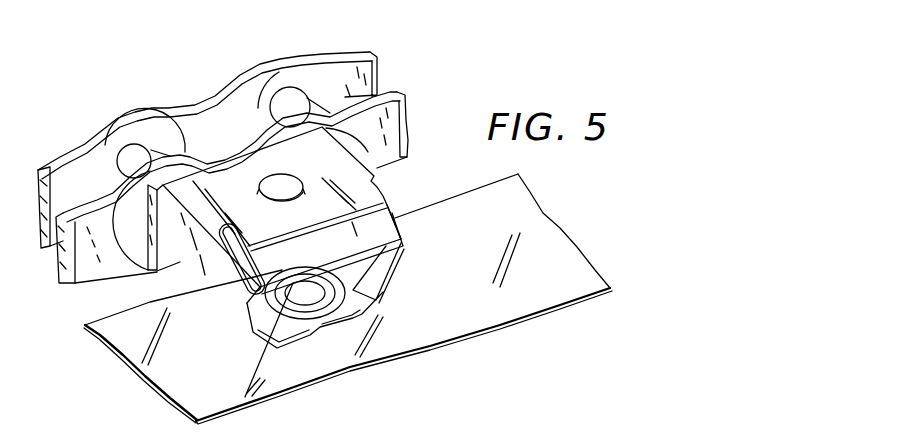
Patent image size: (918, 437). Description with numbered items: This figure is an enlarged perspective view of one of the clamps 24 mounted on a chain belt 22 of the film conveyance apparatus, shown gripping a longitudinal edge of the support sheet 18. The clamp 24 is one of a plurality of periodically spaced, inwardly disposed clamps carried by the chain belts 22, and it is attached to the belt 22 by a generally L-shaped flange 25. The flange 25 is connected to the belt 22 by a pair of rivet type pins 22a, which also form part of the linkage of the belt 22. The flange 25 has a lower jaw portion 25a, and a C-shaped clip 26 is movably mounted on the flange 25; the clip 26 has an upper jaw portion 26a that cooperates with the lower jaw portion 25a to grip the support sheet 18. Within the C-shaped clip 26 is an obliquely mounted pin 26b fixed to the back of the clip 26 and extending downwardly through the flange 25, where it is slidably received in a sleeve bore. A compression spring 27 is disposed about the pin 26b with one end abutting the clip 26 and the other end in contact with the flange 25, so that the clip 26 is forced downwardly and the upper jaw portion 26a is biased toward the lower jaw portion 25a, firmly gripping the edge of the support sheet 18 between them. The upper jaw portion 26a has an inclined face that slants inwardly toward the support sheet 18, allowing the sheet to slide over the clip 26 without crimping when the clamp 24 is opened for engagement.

The support sheet 18 is at (539, 218).
The chain belt 22 is at (335, 57).
The rivet type pins 22a is at (295, 101).
The clamp 24 is at (393, 195).
The L-shaped flange 25 is at (147, 250).
The lower jaw portion 25a is at (400, 246).
The C-shaped clip 26 is at (178, 272).
The upper jaw portion 26a is at (380, 223).
The pin 26b is at (333, 292).
The compression spring 27 is at (337, 305).